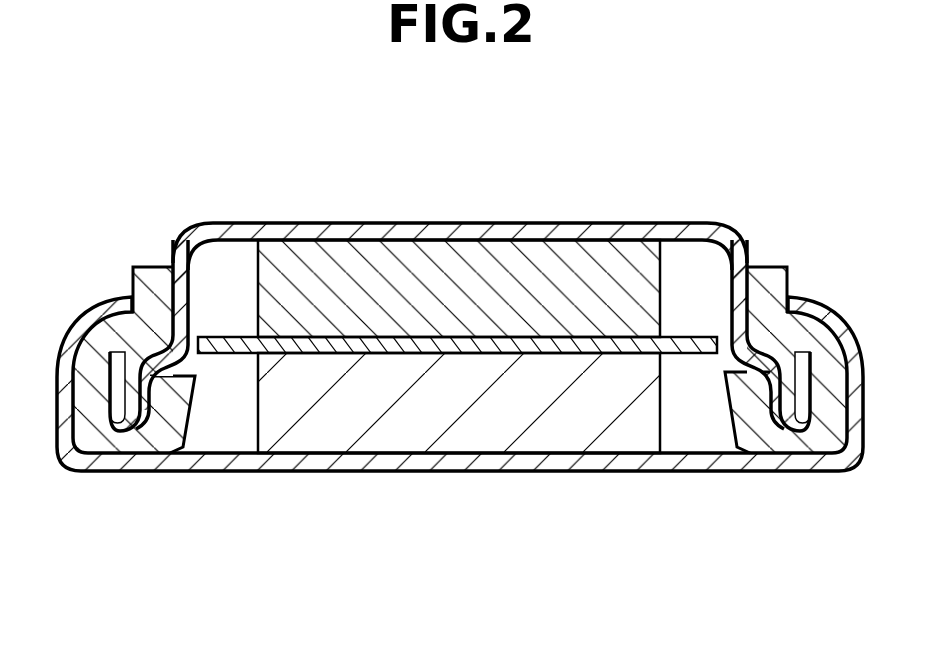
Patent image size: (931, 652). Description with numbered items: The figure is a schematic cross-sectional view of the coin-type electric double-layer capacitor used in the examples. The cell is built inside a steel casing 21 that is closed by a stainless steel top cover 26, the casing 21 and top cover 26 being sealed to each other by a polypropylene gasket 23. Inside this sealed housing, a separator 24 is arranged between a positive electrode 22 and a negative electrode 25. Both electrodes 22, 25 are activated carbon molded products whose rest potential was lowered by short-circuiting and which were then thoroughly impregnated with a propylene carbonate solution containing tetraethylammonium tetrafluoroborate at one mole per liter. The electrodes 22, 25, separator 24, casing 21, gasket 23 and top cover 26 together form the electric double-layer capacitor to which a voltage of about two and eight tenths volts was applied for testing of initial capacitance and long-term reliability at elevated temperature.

The steel casing 21 is at (519, 462).
The positive electrode 22 is at (330, 430).
The polypropylene gasket 23 is at (156, 283).
The separator 24 is at (697, 332).
The negative electrode 25 is at (504, 255).
The stainless steel top cover 26 is at (347, 224).